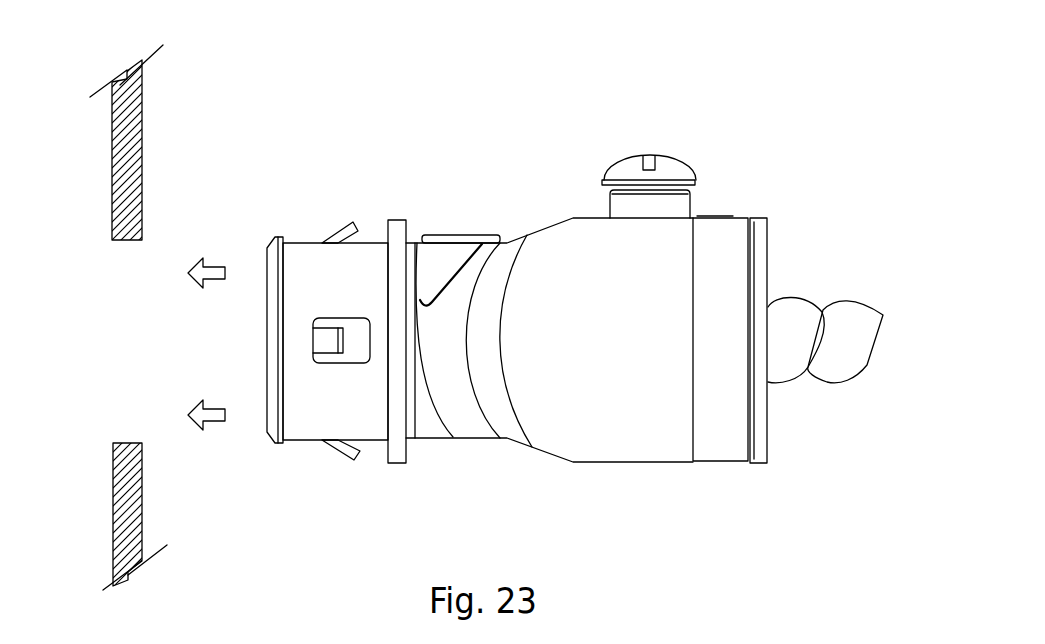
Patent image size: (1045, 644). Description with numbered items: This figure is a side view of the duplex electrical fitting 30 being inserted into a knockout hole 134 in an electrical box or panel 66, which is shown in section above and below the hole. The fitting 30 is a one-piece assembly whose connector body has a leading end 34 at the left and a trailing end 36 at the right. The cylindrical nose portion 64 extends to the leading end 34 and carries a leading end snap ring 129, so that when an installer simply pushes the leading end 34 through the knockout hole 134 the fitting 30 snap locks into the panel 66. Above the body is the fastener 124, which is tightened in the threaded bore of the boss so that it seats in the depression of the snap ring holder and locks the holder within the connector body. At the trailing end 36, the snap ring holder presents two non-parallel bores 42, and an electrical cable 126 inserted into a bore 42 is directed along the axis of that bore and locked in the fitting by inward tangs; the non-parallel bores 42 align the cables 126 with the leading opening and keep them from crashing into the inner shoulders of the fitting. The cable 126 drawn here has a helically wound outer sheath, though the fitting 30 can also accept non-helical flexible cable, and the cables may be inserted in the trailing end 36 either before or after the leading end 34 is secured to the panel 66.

The duplex electrical fitting 30 is at (438, 170).
The leading end 34 is at (267, 338).
The trailing end 36 is at (767, 255).
The non-parallel bores 42 is at (785, 432).
The nose portion 64 is at (330, 468).
The electrical box or panel 66 is at (142, 150).
The fastener 124 is at (653, 152).
The electrical cable 126 is at (843, 340).
The leading end snap ring 129 is at (316, 294).
The knockout hole 134 is at (127, 393).